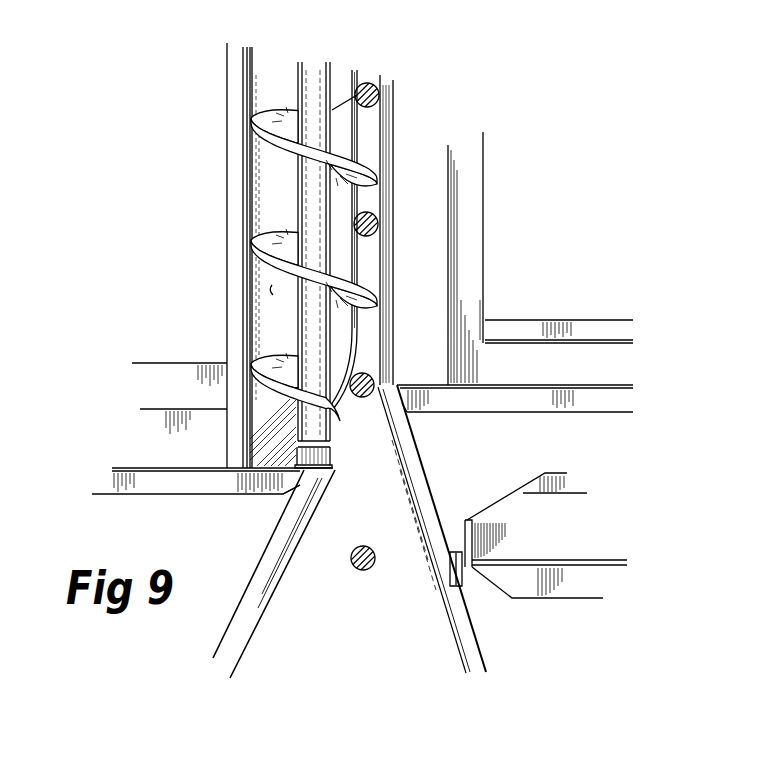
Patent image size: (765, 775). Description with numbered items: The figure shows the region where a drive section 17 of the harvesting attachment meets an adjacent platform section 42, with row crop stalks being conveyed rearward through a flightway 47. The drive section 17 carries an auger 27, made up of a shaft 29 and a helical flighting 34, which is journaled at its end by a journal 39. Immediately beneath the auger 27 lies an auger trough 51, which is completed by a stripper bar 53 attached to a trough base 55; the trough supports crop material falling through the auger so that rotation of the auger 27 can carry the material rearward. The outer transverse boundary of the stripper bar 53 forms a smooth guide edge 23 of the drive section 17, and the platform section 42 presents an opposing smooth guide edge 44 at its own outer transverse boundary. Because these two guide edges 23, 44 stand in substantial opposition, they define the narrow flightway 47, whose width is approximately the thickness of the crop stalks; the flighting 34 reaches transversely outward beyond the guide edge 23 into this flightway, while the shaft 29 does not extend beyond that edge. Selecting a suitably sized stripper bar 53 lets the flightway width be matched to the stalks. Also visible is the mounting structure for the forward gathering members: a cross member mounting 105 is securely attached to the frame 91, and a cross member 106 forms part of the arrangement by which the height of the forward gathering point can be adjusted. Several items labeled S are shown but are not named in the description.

The drive section 17 is at (267, 623).
The platform section 42 is at (450, 638).
The frame 91 is at (280, 558).
The cross member 106 is at (501, 502).
The cross member mounting 105 is at (570, 600).
The journal 39 is at (360, 462).
The shaft 29 is at (305, 170).
The flighting 34 is at (268, 122).
The auger 27 is at (252, 253).
The trough base 55 is at (272, 290).
The auger trough 51 is at (268, 308).
The guide edge 44 is at (373, 120).
The guide edge 23 is at (353, 143).
The stripper bar 53 is at (353, 155).
The flightway 47 is at (368, 334).
The sensor S is at (373, 81).